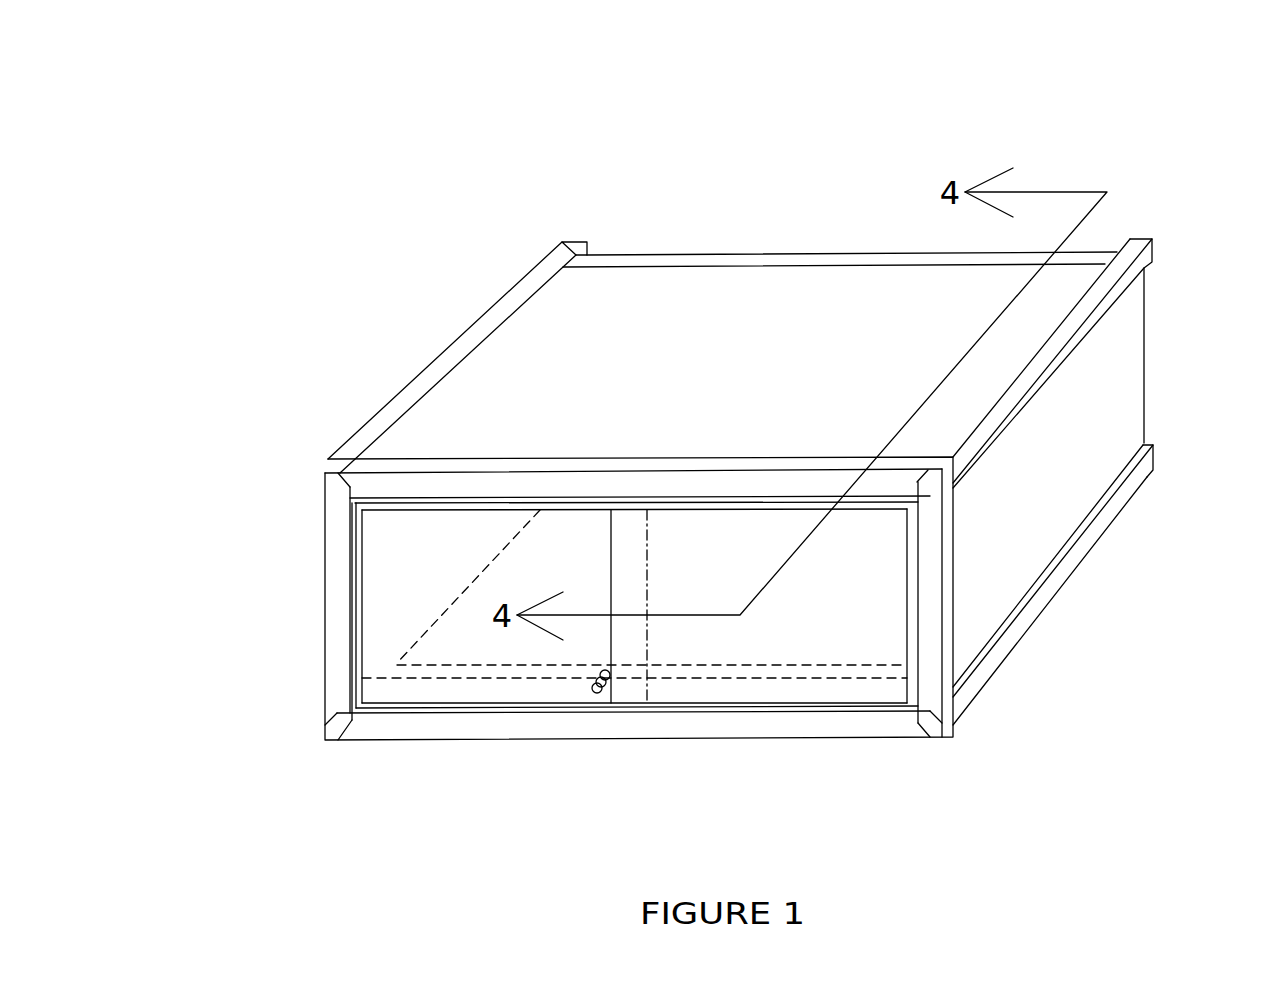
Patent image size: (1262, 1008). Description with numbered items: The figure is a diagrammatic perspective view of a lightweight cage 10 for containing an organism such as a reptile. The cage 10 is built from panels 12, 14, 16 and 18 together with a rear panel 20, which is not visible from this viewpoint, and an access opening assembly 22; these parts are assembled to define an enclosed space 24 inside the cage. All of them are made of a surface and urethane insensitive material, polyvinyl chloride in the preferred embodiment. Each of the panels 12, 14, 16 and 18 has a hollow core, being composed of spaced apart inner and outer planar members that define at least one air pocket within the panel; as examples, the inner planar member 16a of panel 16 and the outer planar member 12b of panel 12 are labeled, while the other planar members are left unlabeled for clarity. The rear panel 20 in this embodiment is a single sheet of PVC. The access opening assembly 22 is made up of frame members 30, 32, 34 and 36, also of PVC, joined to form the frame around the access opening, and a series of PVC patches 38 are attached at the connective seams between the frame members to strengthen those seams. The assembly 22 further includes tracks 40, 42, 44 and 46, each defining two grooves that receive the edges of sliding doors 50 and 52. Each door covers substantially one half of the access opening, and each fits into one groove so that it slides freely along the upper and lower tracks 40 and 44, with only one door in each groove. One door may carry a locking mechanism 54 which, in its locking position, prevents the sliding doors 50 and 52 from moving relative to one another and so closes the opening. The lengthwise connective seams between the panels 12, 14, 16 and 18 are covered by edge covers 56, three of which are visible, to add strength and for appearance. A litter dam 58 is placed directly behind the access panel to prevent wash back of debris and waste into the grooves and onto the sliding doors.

The lightweight cage 10 is at (482, 207).
The panel 12 is at (576, 315).
The outer planar member 12b is at (753, 313).
The panel 14 is at (755, 640).
The panel 16 is at (433, 557).
The inner planar member 16a is at (478, 528).
The panel 18 is at (1147, 382).
The rear panel 20 is at (926, 248).
The access opening assembly 22 is at (857, 738).
The enclosed space 24 is at (832, 615).
The frame member 30 is at (348, 471).
The frame member 32 is at (950, 735).
The frame member 34 is at (400, 745).
The frame member 36 is at (322, 580).
The patch 38 is at (335, 493).
The track 40 is at (350, 496).
The track 42 is at (907, 650).
The track 44 is at (435, 705).
The track 46 is at (360, 555).
The sliding door 50 is at (647, 637).
The sliding door 52 is at (611, 630).
The locking mechanism 54 is at (597, 695).
The edge cover 56 is at (565, 242).
The litter dam 58 is at (722, 702).